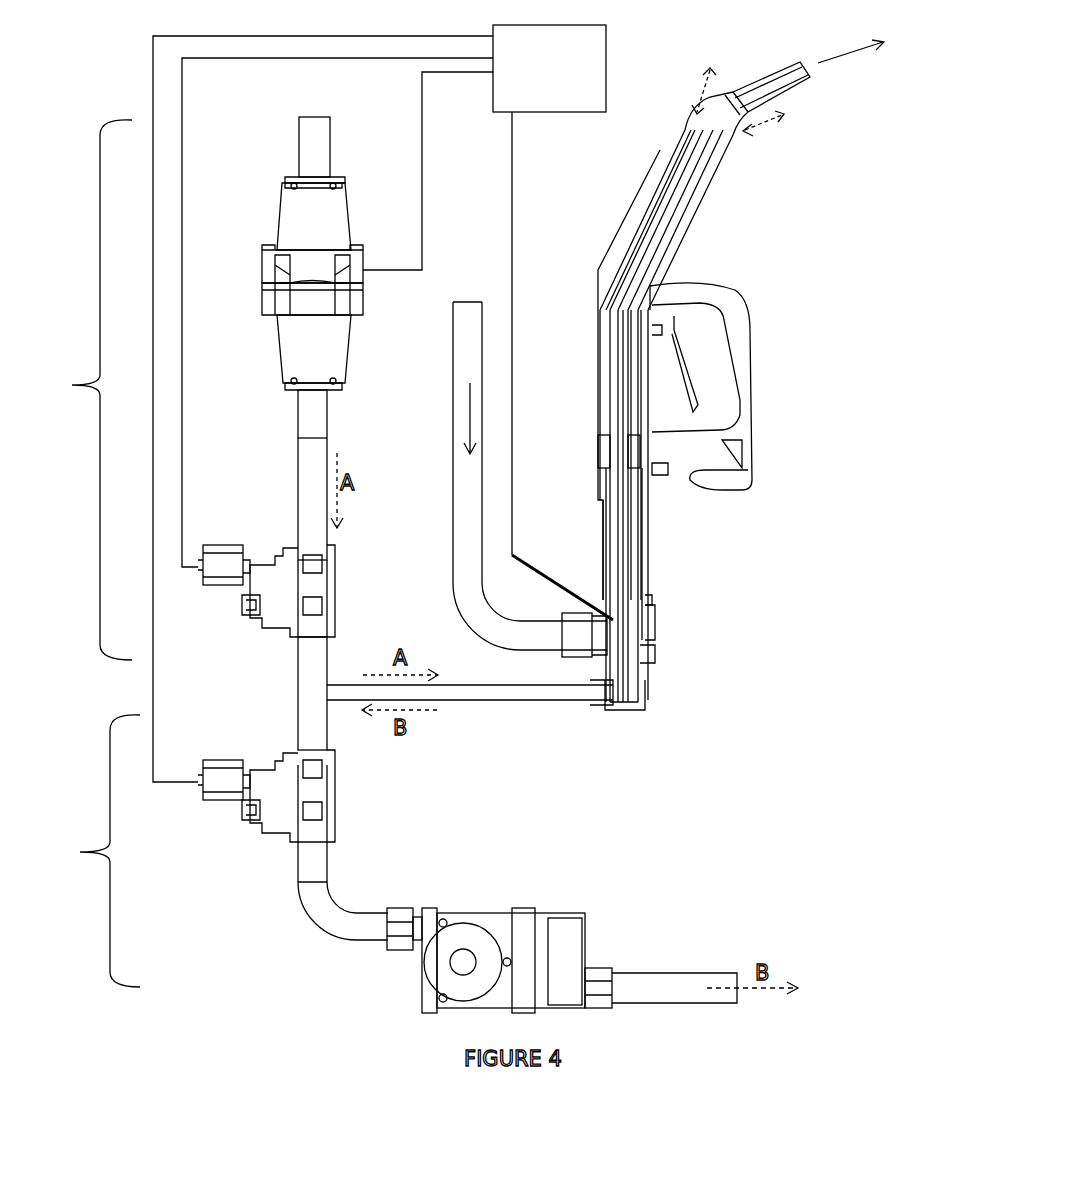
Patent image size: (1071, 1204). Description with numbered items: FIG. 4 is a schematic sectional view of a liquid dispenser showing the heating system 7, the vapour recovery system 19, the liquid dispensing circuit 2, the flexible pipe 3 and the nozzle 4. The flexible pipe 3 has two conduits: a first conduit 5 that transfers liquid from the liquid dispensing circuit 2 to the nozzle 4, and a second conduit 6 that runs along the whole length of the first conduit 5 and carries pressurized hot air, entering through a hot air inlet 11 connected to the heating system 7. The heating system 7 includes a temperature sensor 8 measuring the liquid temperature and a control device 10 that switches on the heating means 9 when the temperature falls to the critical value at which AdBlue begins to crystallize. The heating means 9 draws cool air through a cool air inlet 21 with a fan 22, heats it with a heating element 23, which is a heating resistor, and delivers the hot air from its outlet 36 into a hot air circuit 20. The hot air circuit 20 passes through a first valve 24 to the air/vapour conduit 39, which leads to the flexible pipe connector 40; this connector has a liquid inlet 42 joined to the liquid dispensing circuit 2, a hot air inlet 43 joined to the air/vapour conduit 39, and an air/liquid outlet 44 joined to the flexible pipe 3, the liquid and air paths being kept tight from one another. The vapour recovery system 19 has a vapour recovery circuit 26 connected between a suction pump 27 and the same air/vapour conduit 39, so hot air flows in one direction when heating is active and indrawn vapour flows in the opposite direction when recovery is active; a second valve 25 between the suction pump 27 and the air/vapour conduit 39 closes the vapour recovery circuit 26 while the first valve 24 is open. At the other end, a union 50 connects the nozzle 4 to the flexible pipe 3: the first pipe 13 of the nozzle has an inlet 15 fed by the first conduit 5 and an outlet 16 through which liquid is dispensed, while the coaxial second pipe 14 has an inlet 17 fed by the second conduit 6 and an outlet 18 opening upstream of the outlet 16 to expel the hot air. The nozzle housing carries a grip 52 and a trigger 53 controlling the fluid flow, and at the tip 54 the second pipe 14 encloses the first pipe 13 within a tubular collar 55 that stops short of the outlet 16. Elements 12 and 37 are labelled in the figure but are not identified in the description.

The liquid dispensing circuit 2 is at (460, 300).
The flexible pipe 3 is at (647, 590).
The nozzle 4 is at (615, 267).
The first conduit 5 is at (637, 568).
The second conduit 6 is at (623, 550).
The heating system 7 is at (91, 390).
The temperature sensor 8 is at (566, 600).
The heating means 9 is at (280, 210).
The control device 10 is at (606, 63).
The hot air inlet 11 is at (650, 600).
The handle attachment 12 is at (670, 468).
The first pipe 13 is at (658, 285).
The second pipe 14 is at (672, 170).
The inlet 15 is at (605, 435).
The outlet 16 is at (818, 69).
The inlet 17 is at (625, 463).
The outlet 18 is at (742, 140).
The vapour recovery system 19 is at (96, 851).
The hot air circuit 20 is at (297, 490).
The cool air inlet 21 is at (290, 165).
The fan 22 is at (268, 272).
The heating element 23 is at (265, 307).
The first valve 24 is at (335, 575).
The second valve 25 is at (335, 785).
The vapour recovery circuit 26 is at (318, 718).
The suction pump 27 is at (525, 913).
The outlet 36 is at (288, 402).
The inlet end 37 is at (330, 117).
The air/vapour conduit 39 is at (560, 702).
The flexible pipe connector 40 is at (635, 663).
The liquid inlet 42 is at (595, 653).
The hot air inlet 43 is at (632, 702).
The air/liquid outlet 44 is at (650, 623).
The union 50 is at (600, 508).
The grip 52 is at (605, 373).
The trigger 53 is at (687, 370).
The tip 54 is at (793, 92).
The tubular collar 55 is at (652, 210).